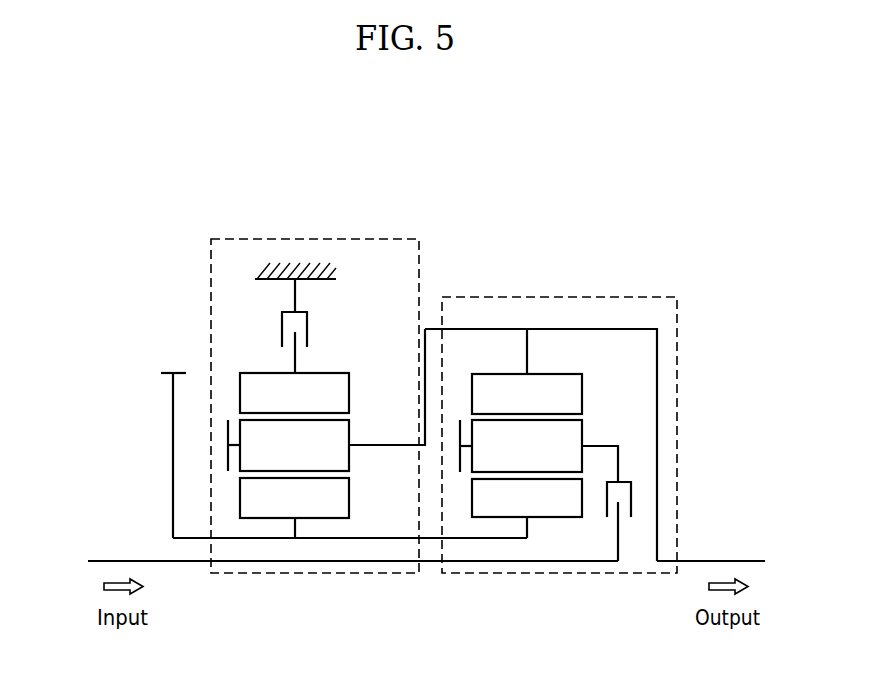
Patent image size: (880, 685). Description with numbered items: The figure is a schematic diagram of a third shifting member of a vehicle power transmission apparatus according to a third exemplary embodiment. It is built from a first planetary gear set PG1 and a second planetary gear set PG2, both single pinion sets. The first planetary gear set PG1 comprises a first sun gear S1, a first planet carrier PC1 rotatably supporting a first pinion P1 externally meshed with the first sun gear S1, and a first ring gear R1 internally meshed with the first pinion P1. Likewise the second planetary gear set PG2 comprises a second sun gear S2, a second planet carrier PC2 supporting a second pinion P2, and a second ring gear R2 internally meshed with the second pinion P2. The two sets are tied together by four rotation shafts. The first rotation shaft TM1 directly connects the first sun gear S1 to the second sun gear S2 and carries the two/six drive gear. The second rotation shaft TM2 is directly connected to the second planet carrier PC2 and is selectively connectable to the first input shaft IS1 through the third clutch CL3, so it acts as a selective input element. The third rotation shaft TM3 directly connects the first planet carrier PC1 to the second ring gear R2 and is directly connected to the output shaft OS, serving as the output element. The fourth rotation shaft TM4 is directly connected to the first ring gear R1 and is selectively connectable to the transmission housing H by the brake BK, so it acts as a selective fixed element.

The first planetary gear set PG1 is at (271, 578).
The second planetary gear set PG2 is at (526, 578).
The transmission housing H is at (278, 268).
The brake BK is at (324, 314).
The first rotation shaft TM1 is at (347, 541).
The second rotation shaft TM2 is at (627, 458).
The third rotation shaft TM3 is at (563, 325).
The fourth rotation shaft TM4 is at (300, 361).
The first ring gear R1 is at (294, 393).
The first pinion P1 is at (288, 445).
The first sun gear S1 is at (294, 498).
The second ring gear R2 is at (527, 394).
The second pinion P2 is at (521, 446).
The second sun gear S2 is at (527, 498).
The first planet carrier PC1 is at (373, 448).
The second planet carrier PC2 is at (600, 445).
The third clutch CL3 is at (604, 524).
The first input shaft IS1 is at (120, 559).
The output shaft OS is at (726, 559).